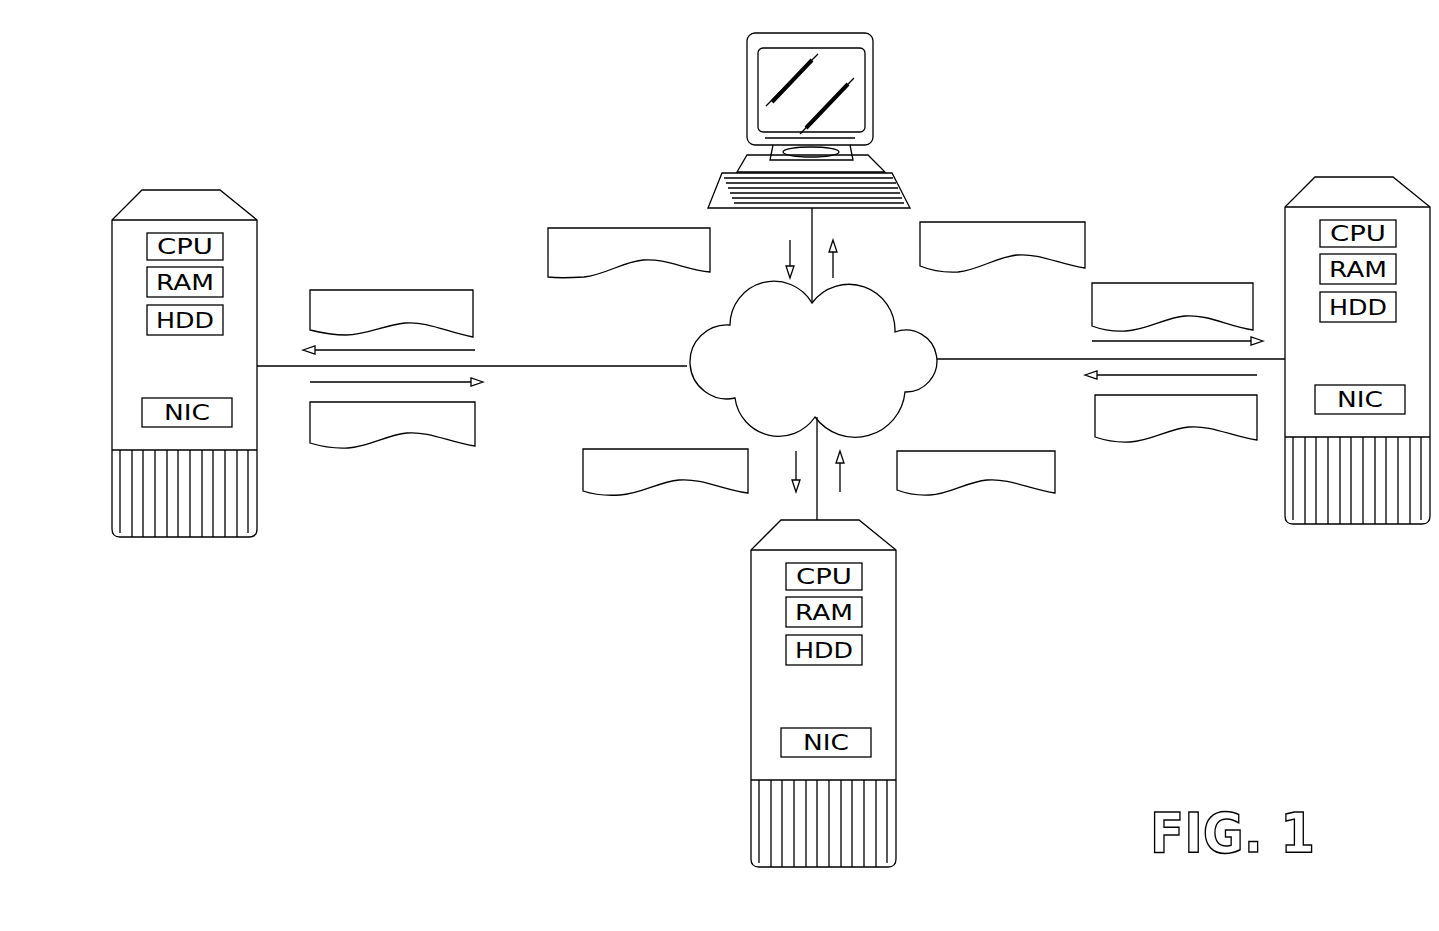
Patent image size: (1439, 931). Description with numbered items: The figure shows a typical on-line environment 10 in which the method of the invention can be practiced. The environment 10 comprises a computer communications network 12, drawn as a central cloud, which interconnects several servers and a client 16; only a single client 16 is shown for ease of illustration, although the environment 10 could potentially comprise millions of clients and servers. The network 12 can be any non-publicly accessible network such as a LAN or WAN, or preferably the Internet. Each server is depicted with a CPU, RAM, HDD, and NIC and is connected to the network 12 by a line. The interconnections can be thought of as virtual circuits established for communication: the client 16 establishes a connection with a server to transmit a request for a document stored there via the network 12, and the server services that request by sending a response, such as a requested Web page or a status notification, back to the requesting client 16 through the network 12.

The on-line environment 10 is at (1047, 96).
The computer communications network 12 is at (690, 378).
The client 16 is at (747, 92).